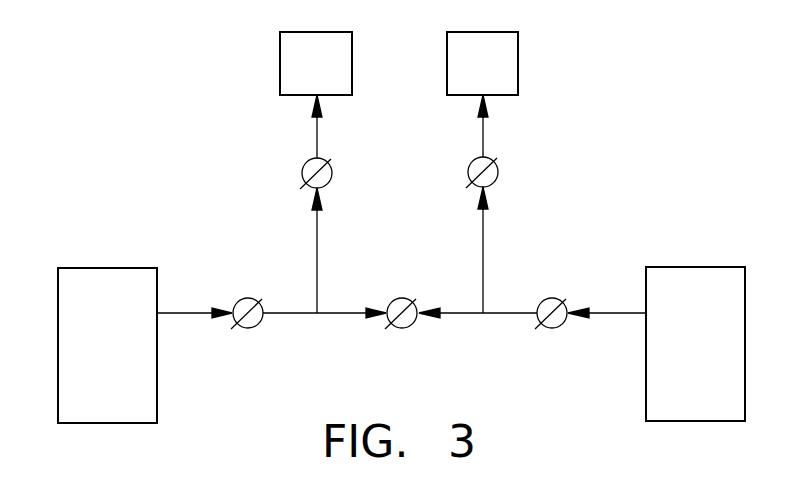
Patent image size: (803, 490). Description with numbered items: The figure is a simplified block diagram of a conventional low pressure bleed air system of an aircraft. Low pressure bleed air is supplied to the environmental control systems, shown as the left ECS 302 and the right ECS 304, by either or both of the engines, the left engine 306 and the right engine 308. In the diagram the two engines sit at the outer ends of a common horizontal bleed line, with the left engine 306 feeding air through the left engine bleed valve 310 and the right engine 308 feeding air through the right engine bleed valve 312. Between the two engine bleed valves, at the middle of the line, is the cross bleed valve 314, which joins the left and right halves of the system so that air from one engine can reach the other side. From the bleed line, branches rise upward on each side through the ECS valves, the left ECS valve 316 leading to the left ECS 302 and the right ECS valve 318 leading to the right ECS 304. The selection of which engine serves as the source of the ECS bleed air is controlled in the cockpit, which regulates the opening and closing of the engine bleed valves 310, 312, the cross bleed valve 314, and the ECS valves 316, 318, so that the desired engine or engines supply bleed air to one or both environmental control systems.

The left ECS 302 is at (280, 65).
The right ECS 304 is at (518, 62).
The left engine 306 is at (112, 268).
The right engine 308 is at (688, 267).
The left engine bleed valve 310 is at (250, 328).
The right engine bleed valve 312 is at (556, 328).
The cross bleed valve 314 is at (405, 328).
The left ECS valve 316 is at (333, 173).
The right ECS valve 318 is at (468, 171).